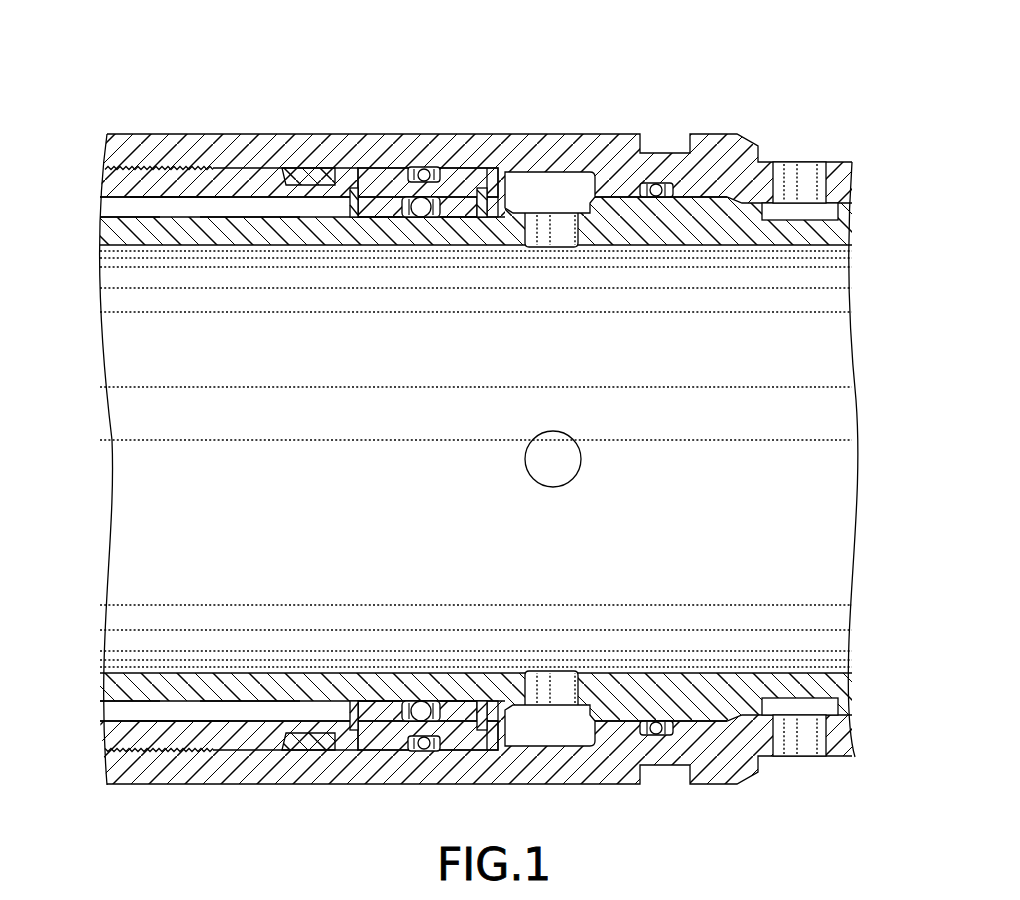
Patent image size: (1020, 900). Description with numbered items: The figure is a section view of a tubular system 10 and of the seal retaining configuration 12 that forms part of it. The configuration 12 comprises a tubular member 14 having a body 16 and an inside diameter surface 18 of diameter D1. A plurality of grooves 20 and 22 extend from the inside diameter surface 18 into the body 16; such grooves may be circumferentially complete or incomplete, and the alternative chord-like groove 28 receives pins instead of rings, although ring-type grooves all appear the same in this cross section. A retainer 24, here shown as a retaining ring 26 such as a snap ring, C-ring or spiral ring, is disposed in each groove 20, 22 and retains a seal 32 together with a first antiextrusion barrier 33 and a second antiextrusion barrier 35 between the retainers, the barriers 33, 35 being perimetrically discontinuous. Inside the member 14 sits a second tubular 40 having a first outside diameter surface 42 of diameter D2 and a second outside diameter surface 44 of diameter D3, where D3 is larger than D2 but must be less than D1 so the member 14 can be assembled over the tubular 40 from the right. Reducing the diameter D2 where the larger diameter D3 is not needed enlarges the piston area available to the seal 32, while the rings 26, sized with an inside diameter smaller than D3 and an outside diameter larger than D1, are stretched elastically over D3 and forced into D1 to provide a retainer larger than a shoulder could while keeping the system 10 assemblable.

The tubular system 10 is at (634, 90).
The seal retaining configuration 12 is at (373, 140).
The tubular member 14 is at (140, 158).
The body 16 is at (250, 180).
The inside diameter surface 18 is at (216, 197).
The groove 20 is at (366, 158).
The groove 22 is at (487, 186).
The retainer 24 is at (355, 200).
The retaining ring 26 is at (490, 195).
The groove 28 is at (443, 405).
The seal 32 is at (454, 170).
The first antiextrusion barrier 33 is at (380, 213).
The second antiextrusion barrier 35 is at (462, 213).
The second tubular 40 is at (742, 223).
The first outside diameter surface 42 is at (121, 217).
The second outside diameter surface 44 is at (708, 195).
The diameter of inside diameter surface D1 is at (158, 197).
The diameter of first outside diameter surface D2 is at (222, 217).
The diameter of second outside diameter surface D3 is at (641, 150).